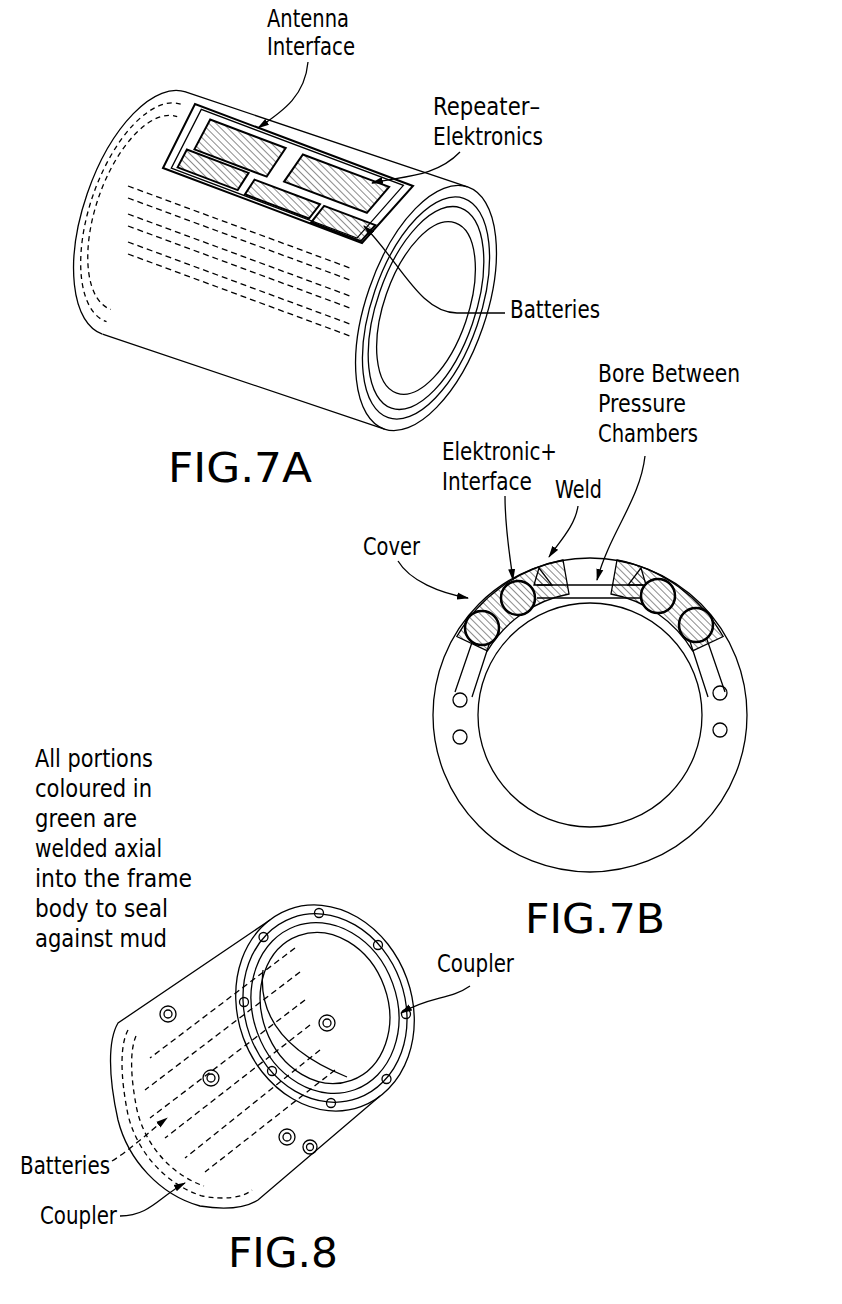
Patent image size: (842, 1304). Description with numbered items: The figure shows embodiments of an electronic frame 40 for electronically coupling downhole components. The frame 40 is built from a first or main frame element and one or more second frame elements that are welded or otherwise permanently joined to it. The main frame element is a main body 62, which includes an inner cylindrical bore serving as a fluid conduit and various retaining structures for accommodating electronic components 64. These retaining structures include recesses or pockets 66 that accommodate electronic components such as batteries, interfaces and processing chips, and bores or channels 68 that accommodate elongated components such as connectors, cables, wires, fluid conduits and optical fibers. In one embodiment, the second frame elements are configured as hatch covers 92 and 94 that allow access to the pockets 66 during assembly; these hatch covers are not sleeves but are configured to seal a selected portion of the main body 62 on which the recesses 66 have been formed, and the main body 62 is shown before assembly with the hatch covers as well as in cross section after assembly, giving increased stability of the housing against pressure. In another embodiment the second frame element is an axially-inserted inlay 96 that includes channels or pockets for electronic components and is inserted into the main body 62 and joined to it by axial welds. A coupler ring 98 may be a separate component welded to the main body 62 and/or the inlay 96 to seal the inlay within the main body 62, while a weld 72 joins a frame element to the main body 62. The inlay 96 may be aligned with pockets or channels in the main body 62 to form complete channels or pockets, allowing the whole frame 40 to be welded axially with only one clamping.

In FIG. 7A, the main body 62 is at (491, 258).
In FIG. 7B, the main body 62 is at (699, 820).
In FIG. 8, the main body 62 is at (213, 940).
In FIG. 7A, the electronic components 64 is at (207, 147).
In FIG. 7B, the electronic components 64 is at (659, 577).
In FIG. 8, the electronic components 64 is at (180, 1095).
In FIG. 7A, the pockets 66 is at (178, 158).
In FIG. 7B, the pockets 66 is at (717, 609).
In FIG. 7A, the bores 68 is at (160, 211).
In FIG. 7B, the bores 68 is at (468, 700).
In FIG. 7B, the hatch cover 92 is at (497, 590).
In FIG. 7B, the hatch cover 94 is at (703, 587).
In FIG. 7B, the frame 40 is at (801, 530).
In FIG. 8, the frame 40 is at (531, 1042).
In FIG. 8, the inlay 96 is at (319, 959).
In FIG. 8, the weld 72 is at (373, 947).
In FIG. 8, the coupler ring 98 is at (411, 1088).